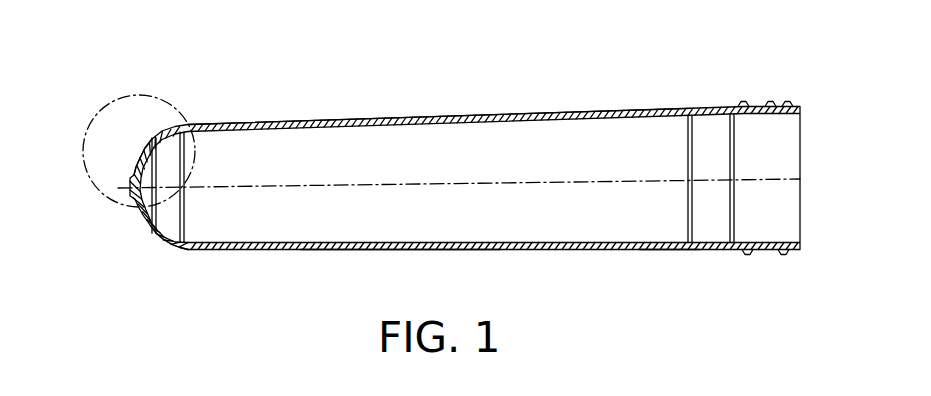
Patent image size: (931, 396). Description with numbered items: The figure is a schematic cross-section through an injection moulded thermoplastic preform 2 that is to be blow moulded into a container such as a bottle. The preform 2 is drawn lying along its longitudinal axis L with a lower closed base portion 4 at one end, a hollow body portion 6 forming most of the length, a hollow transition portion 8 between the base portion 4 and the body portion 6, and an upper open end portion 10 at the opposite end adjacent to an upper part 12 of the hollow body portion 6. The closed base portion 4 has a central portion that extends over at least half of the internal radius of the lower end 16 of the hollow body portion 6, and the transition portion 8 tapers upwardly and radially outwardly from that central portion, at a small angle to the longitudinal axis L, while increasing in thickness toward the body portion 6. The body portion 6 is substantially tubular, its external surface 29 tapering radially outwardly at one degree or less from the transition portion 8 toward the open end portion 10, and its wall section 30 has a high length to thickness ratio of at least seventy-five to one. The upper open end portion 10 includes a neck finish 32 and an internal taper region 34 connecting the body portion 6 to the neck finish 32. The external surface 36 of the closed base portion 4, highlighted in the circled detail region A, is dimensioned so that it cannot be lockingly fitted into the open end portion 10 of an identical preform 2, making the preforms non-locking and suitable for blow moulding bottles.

The preform 2 is at (432, 112).
The lower closed base portion 4 is at (142, 221).
The hollow body portion 6 is at (394, 251).
The hollow transition portion 8 is at (165, 245).
The upper open end portion 10 is at (750, 255).
The upper part of the hollow body portion 12 is at (663, 251).
The lower end of the hollow body portion 16 is at (191, 125).
The external surface of the body portion 29 is at (310, 121).
The wall section of the body portion 30 is at (512, 112).
The neck finish 32 is at (766, 101).
The internal taper region 34 is at (705, 106).
The external surface of the closed base portion 36 is at (139, 164).
The detail region A is at (88, 182).
The longitudinal axis L is at (533, 181).